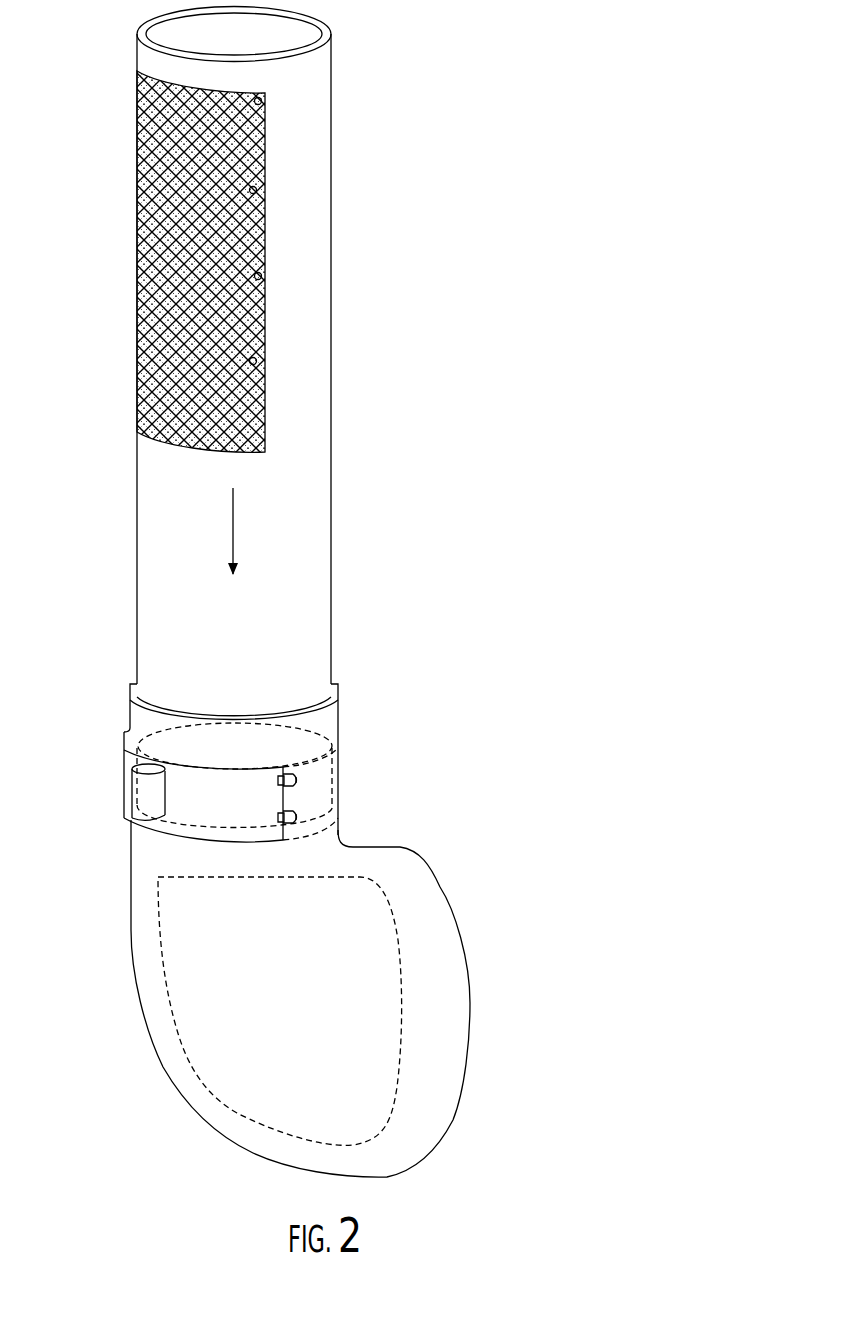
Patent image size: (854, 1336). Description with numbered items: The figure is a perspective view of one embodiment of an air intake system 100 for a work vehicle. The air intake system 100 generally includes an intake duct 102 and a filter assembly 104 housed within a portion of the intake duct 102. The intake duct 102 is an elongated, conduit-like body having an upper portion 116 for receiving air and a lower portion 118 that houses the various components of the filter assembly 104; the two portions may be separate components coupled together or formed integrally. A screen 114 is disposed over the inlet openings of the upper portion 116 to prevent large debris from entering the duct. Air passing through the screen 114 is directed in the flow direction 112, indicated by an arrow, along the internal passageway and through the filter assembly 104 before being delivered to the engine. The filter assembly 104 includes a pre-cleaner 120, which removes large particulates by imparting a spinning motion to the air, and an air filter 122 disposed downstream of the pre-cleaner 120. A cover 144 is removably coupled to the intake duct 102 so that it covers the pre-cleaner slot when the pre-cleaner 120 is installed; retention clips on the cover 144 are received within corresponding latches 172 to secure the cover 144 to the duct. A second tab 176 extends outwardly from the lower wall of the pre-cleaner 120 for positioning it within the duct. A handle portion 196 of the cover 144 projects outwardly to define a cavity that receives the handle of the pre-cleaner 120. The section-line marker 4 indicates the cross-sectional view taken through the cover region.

The air intake system 100 is at (464, 166).
The intake duct 102 is at (96, 577).
The filter assembly 104 is at (146, 909).
The flow direction 112 is at (233, 520).
The screen 114 is at (137, 263).
The upper portion 116 is at (318, 455).
The lower portion 118 is at (155, 1010).
The pre-cleaner 120 is at (233, 797).
The air filter 122 is at (190, 1048).
The cover 144 is at (186, 814).
The latches 172 is at (300, 788).
The second tab 176 is at (280, 790).
The handle portion 196 is at (138, 792).
The section line 4- 4 is at (357, 738).